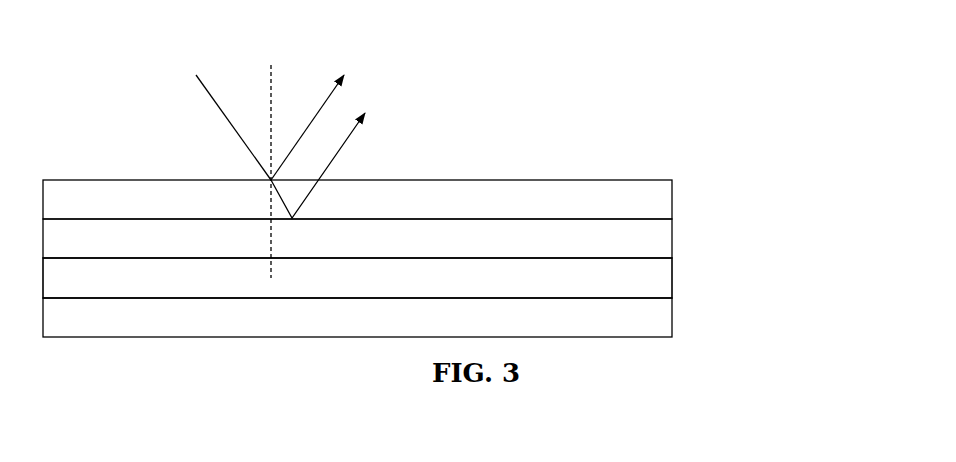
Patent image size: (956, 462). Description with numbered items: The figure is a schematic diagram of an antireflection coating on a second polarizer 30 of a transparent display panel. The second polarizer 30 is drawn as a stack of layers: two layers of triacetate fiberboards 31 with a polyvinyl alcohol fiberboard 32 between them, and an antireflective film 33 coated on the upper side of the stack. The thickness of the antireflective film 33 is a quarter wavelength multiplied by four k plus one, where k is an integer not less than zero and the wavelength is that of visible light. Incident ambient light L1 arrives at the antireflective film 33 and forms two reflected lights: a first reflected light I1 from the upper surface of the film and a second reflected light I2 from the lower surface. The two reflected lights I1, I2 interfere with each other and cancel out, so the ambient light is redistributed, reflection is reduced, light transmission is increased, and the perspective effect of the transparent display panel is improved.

The second polarizer 30 is at (443, 240).
The triacetate fiberboards 31 is at (672, 238).
The polyvinyl alcohol fiberboard 32 is at (672, 277).
The antireflective film 33 is at (672, 198).
The incident ambient light L1 is at (226, 113).
The first reflected light I1 is at (309, 113).
The second reflected light I2 is at (328, 156).